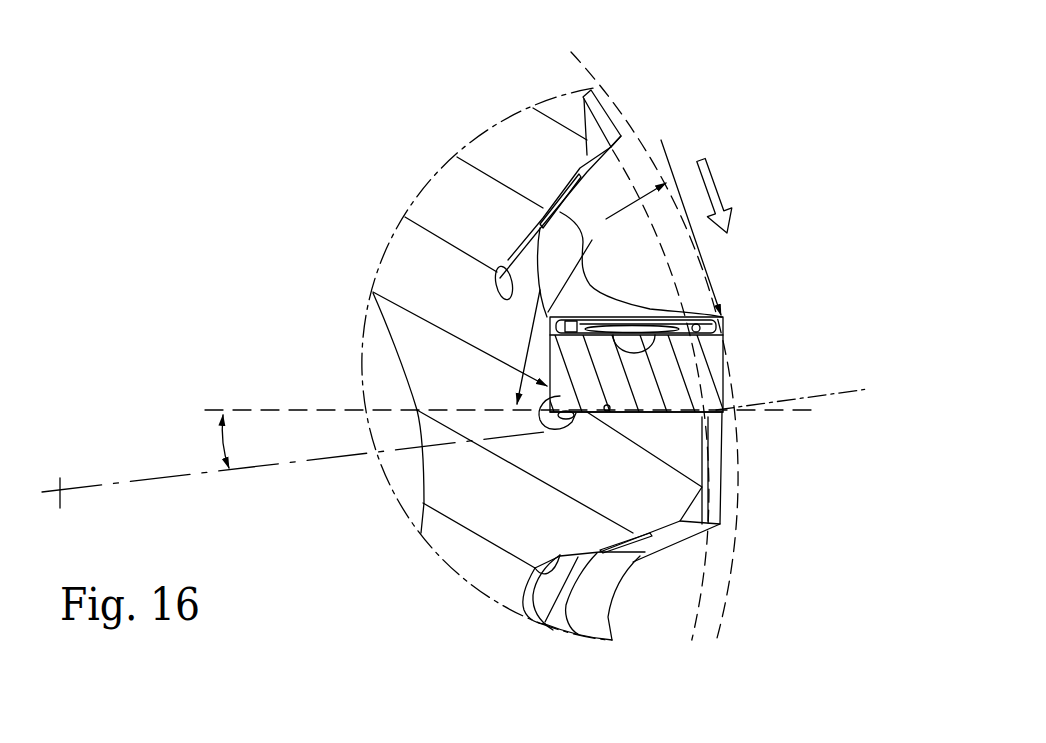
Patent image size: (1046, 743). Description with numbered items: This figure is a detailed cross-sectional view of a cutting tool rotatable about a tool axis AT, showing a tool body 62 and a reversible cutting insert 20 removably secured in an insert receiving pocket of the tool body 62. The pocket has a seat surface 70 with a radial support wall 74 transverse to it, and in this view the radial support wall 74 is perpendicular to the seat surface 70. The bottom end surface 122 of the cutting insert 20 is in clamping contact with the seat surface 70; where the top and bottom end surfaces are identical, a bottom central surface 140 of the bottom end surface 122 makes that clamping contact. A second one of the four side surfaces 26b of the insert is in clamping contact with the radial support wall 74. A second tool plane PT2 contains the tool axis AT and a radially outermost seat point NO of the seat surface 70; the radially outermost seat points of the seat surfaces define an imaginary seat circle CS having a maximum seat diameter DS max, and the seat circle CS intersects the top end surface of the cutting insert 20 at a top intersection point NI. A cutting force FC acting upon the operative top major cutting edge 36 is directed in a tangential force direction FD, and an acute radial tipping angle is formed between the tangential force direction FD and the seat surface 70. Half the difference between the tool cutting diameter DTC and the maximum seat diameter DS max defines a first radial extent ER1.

The tool body 62 is at (460, 213).
The radial support wall 74 is at (538, 342).
The top major cutting edge 36 is at (722, 316).
The reversible cutting insert 20 is at (725, 390).
The seat surface 70 is at (593, 412).
The bottom central surface 140 is at (647, 417).
The bottom end surface 122 is at (658, 417).
The second side surface 26b is at (517, 412).
The tool cutting diameter DTC is at (643, 337).
The maximum seat diameter DS max is at (531, 84).
The tangential force direction FD is at (682, 215).
The cutting force FC is at (711, 181).
The top intersection point NI is at (721, 320).
The second tool plane PT2 is at (815, 392).
The radially outermost seat point NO is at (722, 420).
The first radial extent ER1 is at (667, 565).
The imaginary seat circle CS is at (697, 607).
The tool axis AT is at (58, 493).